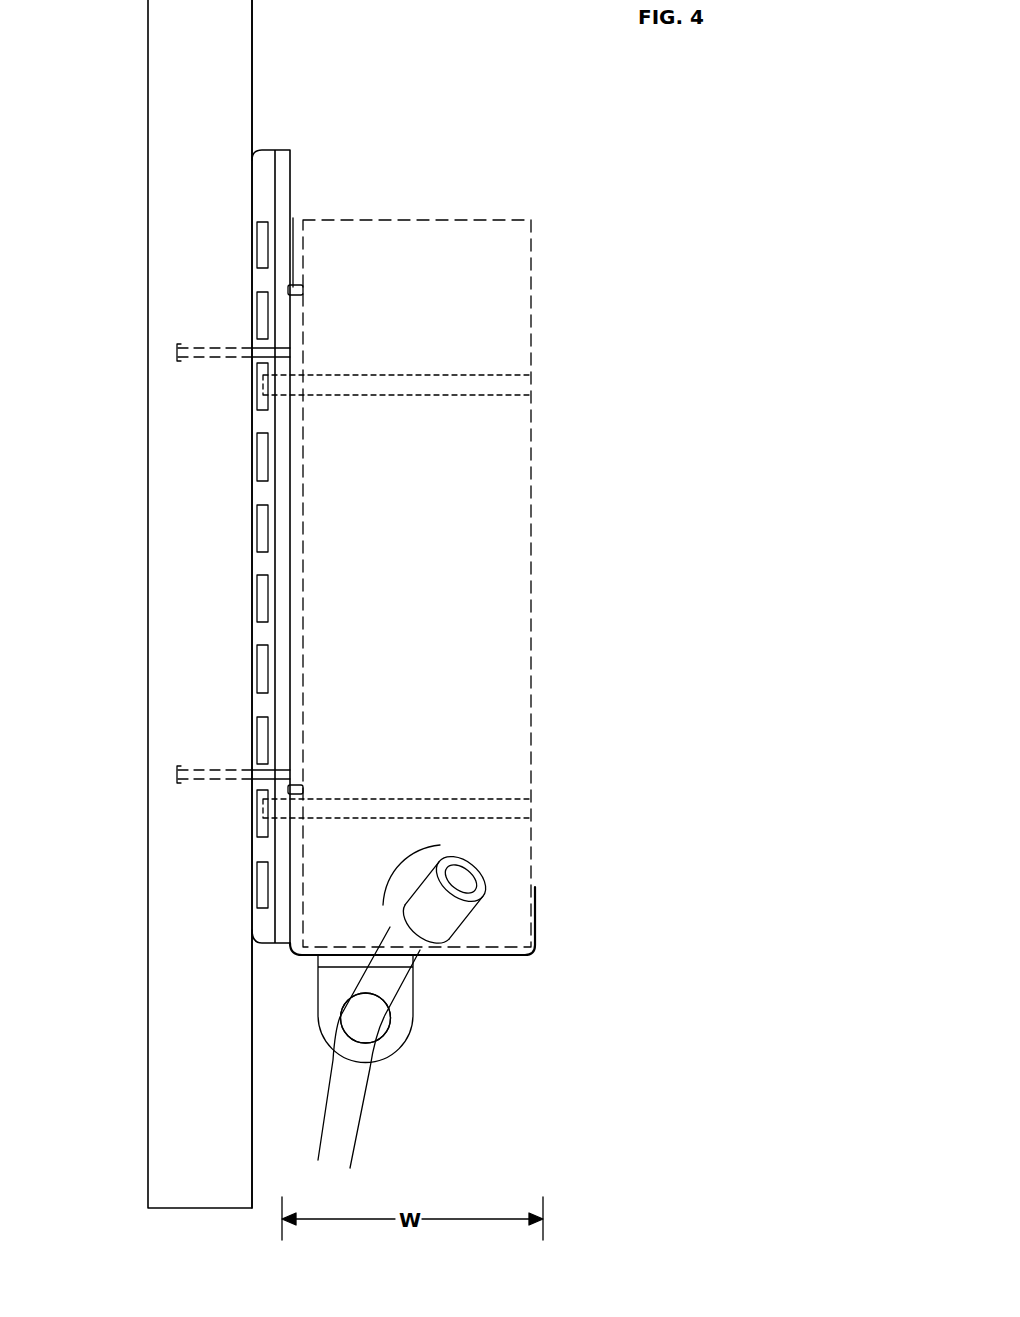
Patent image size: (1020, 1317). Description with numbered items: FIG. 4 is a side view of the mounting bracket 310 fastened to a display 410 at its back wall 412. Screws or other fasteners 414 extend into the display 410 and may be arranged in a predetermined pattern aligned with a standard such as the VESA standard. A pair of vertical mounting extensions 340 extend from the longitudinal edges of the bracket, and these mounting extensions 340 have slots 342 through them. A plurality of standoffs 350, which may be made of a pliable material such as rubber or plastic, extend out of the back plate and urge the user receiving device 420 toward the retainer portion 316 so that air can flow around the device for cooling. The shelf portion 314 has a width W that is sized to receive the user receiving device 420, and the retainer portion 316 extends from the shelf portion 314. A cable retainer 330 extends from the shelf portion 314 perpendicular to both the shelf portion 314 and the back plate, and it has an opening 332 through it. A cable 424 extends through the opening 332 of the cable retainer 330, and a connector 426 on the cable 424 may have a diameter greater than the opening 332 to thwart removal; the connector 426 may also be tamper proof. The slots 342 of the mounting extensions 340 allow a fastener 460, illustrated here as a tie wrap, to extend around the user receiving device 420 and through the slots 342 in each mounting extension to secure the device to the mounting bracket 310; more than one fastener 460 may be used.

The display 410 is at (150, 0).
The back wall 412 is at (253, 20).
The mounting extensions 340 is at (264, 150).
The slots 342 is at (261, 222).
The standoffs 350 is at (293, 216).
The mounting bracket 310 is at (297, 141).
The user receiving device 420 is at (531, 245).
The fasteners 414 is at (192, 345).
The fastener 460 is at (495, 375).
The retainer portion 316 is at (540, 912).
The shelf portion 314 is at (512, 957).
The cable retainer 330 is at (335, 985).
The opening 332 is at (383, 1040).
The cable 424 is at (440, 845).
The connector 426 is at (450, 905).